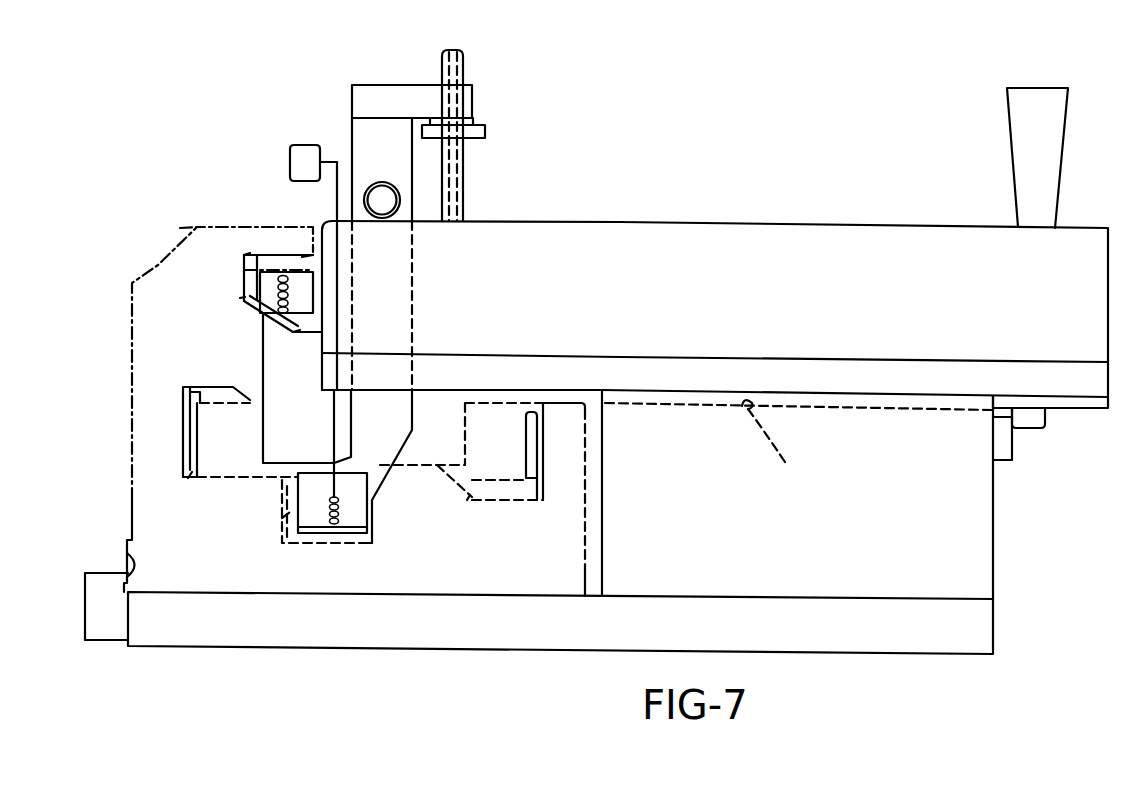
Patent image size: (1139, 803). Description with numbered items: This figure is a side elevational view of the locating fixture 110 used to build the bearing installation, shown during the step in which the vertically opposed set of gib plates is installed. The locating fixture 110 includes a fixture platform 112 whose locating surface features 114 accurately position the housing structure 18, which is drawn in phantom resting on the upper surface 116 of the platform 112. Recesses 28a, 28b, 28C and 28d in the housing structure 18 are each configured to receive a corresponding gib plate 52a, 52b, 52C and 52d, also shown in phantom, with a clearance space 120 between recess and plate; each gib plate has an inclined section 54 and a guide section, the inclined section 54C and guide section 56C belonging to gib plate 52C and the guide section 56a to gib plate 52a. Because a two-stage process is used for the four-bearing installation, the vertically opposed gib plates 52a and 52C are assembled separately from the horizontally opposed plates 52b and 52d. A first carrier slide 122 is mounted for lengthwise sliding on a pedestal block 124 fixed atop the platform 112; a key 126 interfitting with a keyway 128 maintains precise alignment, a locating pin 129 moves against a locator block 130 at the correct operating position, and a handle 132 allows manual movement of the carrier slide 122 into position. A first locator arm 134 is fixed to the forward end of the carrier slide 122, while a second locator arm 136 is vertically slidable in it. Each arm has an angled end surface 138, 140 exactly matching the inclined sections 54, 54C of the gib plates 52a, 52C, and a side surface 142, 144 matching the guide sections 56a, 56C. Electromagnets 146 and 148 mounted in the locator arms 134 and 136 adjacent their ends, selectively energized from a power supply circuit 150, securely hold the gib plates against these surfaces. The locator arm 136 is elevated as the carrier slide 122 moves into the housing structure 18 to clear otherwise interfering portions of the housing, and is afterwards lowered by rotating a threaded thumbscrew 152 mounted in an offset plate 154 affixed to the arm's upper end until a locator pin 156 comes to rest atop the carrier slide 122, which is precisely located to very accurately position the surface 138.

The housing structure 18 is at (130, 500).
The recess 28a is at (282, 516).
The recess 28b is at (190, 478).
The recess 28C is at (245, 297).
The recess 28d is at (467, 500).
The gib plate 52a is at (282, 540).
The gib plate 52b is at (183, 390).
The gib plate 52C is at (250, 253).
The gib plate 52d is at (540, 505).
The inclined section 54 is at (197, 443).
The inclined section 54C is at (302, 257).
The guide section 56a is at (289, 481).
The guide section 56C is at (180, 228).
The locating fixture 110 is at (104, 648).
The fixture platform 112 is at (298, 646).
The locating surface features 114 is at (127, 557).
The upper surface 116 is at (186, 592).
The clearance space 120 is at (243, 285).
The first carrier slide 122 is at (752, 187).
The pedestal block 124 is at (734, 555).
The key 126 is at (1035, 400).
The keyway 128 is at (799, 442).
The locating pin 129 is at (1037, 423).
The locator block 130 is at (997, 440).
The handle 132 is at (1006, 164).
The first locator arm 134 is at (293, 331).
The second locator arm 136 is at (366, 440).
The angled end surface 138 is at (325, 532).
The angled end surface 140 is at (290, 267).
The side surface 142 is at (323, 502).
The side surface 144 is at (243, 306).
The electromagnet 146 is at (344, 512).
The electromagnet 148 is at (293, 294).
The power supply circuit 150 is at (304, 145).
The threaded thumbscrew 152 is at (487, 131).
The offset plate 154 is at (369, 87).
The locator pin 156 is at (382, 182).